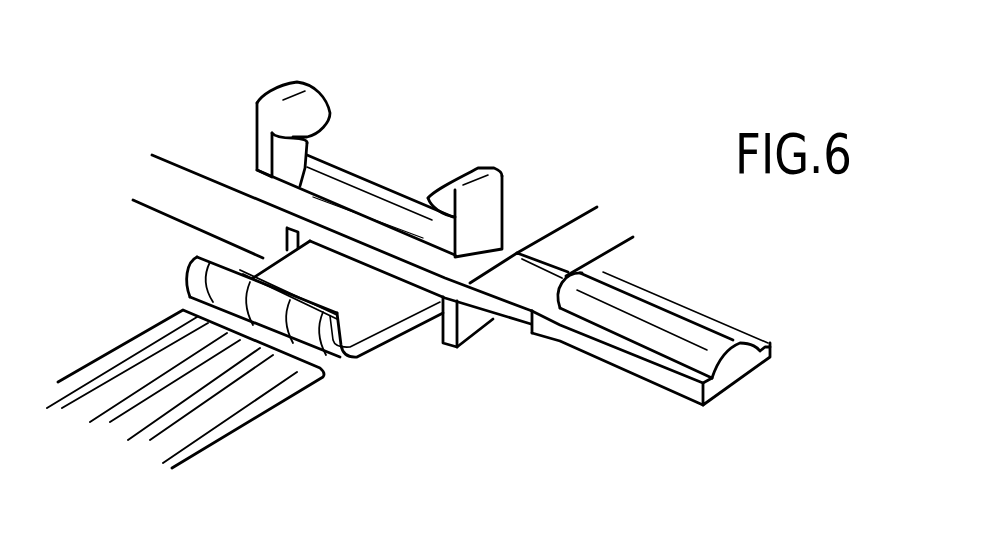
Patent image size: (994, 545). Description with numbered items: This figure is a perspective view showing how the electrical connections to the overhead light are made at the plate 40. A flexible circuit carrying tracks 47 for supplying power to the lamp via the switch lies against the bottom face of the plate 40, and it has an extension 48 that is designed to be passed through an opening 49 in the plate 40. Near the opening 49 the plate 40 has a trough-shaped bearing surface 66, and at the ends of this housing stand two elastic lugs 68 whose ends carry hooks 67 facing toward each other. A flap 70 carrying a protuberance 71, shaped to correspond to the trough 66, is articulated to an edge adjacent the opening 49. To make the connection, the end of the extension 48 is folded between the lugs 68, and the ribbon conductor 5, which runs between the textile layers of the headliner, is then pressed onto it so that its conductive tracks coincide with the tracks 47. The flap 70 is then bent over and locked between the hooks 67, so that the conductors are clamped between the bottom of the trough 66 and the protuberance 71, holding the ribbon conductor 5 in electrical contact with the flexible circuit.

The secondary ribbon conductor 5 is at (110, 355).
The plate 40 is at (565, 206).
The tracks 47 is at (205, 289).
The extension 48 is at (362, 333).
The opening 49 is at (437, 327).
The trough-shaped bearing surface 66 is at (390, 186).
The hooks 67 is at (320, 107).
The elastic lugs 68 is at (252, 135).
The flap 70 is at (613, 338).
The protuberance 71 is at (698, 332).